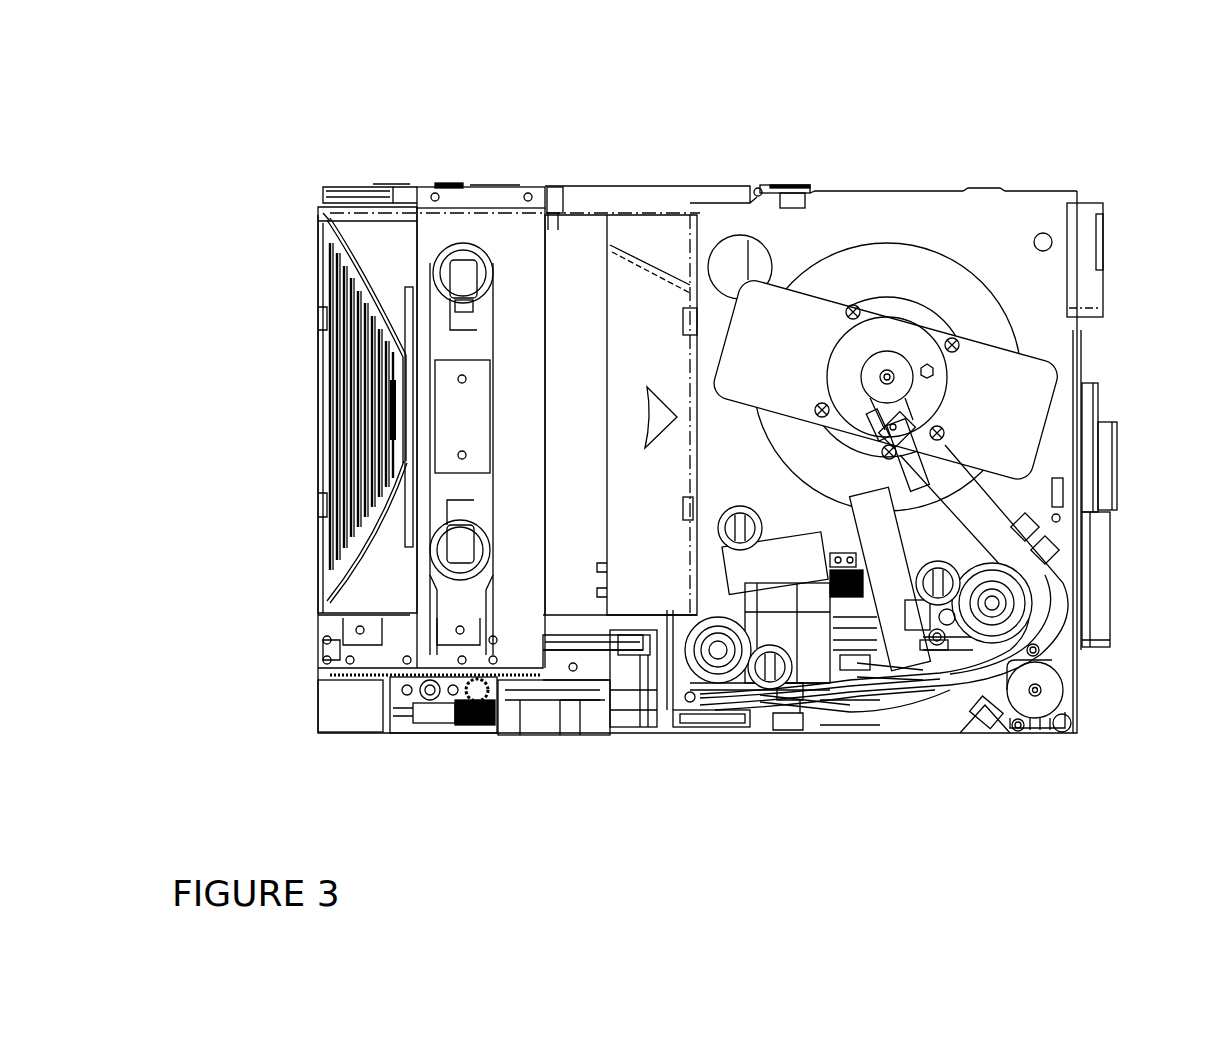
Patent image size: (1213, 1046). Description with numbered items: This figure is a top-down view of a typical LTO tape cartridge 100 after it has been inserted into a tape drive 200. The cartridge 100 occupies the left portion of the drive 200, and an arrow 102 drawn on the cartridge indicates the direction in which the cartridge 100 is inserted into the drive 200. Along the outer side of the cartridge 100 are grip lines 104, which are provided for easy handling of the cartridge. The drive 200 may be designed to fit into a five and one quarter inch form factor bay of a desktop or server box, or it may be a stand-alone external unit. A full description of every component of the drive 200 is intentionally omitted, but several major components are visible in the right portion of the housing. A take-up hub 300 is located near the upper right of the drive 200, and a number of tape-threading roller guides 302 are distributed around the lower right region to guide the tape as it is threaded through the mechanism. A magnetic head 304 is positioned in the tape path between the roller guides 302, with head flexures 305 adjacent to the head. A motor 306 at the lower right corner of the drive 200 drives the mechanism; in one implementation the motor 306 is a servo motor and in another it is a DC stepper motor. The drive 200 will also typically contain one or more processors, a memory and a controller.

The tape drive 200 is at (648, 170).
The grip lines 104 is at (300, 364).
The tape cartridge 100 is at (663, 554).
The arrow 102 is at (644, 368).
The take-up hub 300 is at (786, 374).
The tape-threading roller guides 302 is at (709, 595).
The magnetic head 304 is at (869, 710).
The head flexures 305 is at (779, 576).
The motor 306 is at (1095, 697).